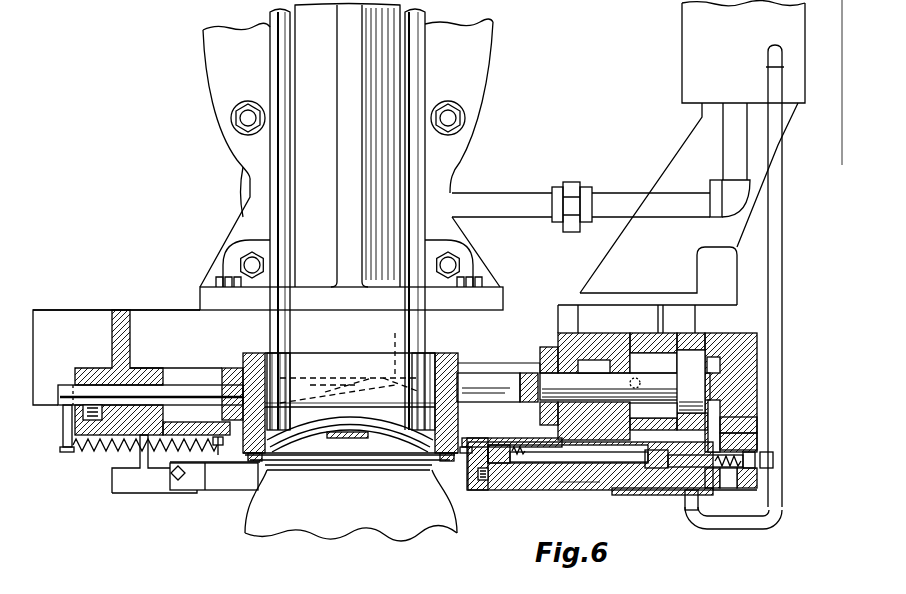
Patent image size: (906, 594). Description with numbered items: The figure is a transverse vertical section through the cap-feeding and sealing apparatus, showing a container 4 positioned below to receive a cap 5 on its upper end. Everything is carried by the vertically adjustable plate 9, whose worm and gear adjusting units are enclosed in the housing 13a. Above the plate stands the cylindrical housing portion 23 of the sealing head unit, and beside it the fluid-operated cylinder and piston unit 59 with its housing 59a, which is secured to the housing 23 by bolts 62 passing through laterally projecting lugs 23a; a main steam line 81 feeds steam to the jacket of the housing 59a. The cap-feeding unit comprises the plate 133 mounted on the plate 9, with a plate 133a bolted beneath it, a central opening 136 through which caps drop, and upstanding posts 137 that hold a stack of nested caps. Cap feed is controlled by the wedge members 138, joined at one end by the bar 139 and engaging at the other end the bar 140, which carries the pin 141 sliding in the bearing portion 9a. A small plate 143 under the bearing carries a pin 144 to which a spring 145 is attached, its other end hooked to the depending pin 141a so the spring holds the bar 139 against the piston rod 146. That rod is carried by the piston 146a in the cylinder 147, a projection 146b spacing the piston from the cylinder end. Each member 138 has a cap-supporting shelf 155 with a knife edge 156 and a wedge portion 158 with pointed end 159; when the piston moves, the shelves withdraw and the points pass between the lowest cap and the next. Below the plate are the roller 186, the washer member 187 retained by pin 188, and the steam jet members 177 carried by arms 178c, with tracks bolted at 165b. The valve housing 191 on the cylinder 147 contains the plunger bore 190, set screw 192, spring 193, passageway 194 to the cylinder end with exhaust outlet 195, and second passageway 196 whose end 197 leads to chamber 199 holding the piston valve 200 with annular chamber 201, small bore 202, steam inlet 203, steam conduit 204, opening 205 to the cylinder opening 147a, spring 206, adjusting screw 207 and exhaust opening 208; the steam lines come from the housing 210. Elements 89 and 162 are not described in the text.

The container 4 is at (324, 518).
The cap 5 is at (401, 428).
The plate 9 is at (88, 322).
The bearing portion 9a is at (90, 372).
The housing 13a is at (728, 296).
The cylindrical housing portion 23 is at (300, 45).
The lugs 23a is at (480, 263).
The fluid-operated cylinder and piston unit 59 is at (494, 30).
The housing 59a is at (478, 58).
The bolts 62 is at (462, 258).
The main steam line 81 is at (606, 203).
The strip plate 89 is at (467, 438).
The plate 133 is at (446, 362).
The plate 133a is at (273, 418).
The opening 136 is at (296, 362).
The posts 137 is at (282, 73).
The cap separating wedge members 138 is at (483, 388).
The bar 139 is at (528, 378).
The bar 140 is at (232, 368).
The pin 141 is at (155, 395).
The depending pin 141a is at (66, 453).
The small plate 143 is at (190, 415).
The pin 144 is at (220, 456).
The spring 145 is at (108, 452).
The piston rod 146 is at (598, 385).
The piston 146a is at (693, 358).
The projection 146b is at (757, 378).
The cylinder 147 is at (672, 346).
The opening 147a is at (737, 428).
The cap-supporting shelf 155 is at (322, 378).
The knife edge 156 is at (357, 390).
The cap-separating wedge portion 158 is at (399, 347).
The pointed end 159 is at (383, 378).
The pad 162 is at (340, 440).
The bolts 165b is at (177, 481).
The steam jet members 177 is at (210, 486).
The arms 178c is at (140, 480).
The roller 186 is at (268, 471).
The washer member 187 is at (424, 463).
The pin 188 is at (449, 462).
The bore 190 is at (470, 452).
The valve housing 191 is at (600, 472).
The set screw 192 is at (480, 482).
The spring 193 is at (518, 448).
The passageway 194 is at (556, 463).
The exhaust outlet 195 is at (640, 382).
The second passageway 196 is at (580, 484).
The end of passageway 197 is at (505, 466).
The chamber 199 is at (688, 498).
The piston valve 200 is at (718, 492).
The annular chamber 201 is at (700, 529).
The small bore 202 is at (650, 494).
The steam inlet 203 is at (656, 410).
The steam conduit 204 is at (770, 85).
The opening 205 is at (722, 445).
The spring 206 is at (722, 462).
The screw 207 is at (776, 462).
The exhaust opening 208 is at (758, 479).
The housing 210 is at (695, 72).